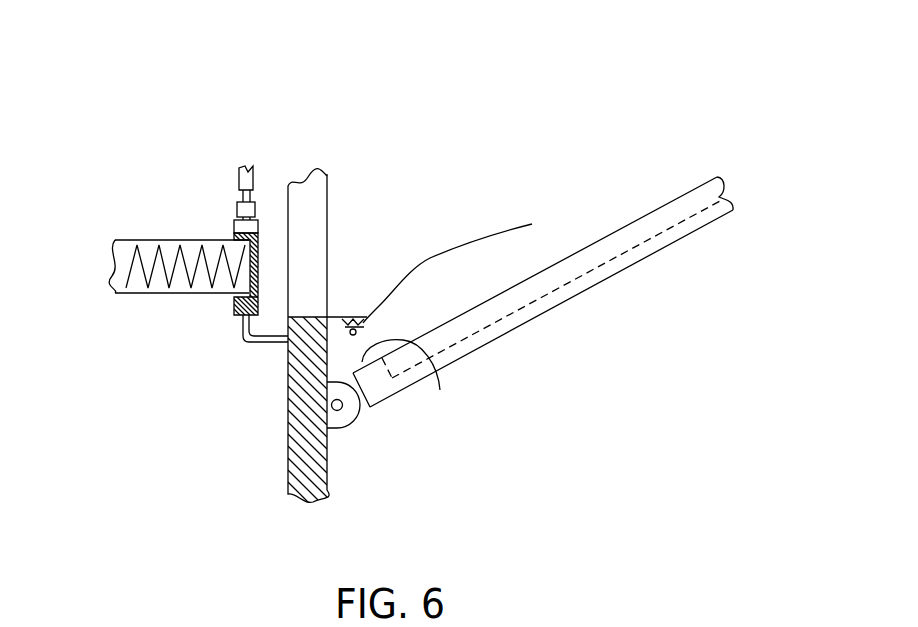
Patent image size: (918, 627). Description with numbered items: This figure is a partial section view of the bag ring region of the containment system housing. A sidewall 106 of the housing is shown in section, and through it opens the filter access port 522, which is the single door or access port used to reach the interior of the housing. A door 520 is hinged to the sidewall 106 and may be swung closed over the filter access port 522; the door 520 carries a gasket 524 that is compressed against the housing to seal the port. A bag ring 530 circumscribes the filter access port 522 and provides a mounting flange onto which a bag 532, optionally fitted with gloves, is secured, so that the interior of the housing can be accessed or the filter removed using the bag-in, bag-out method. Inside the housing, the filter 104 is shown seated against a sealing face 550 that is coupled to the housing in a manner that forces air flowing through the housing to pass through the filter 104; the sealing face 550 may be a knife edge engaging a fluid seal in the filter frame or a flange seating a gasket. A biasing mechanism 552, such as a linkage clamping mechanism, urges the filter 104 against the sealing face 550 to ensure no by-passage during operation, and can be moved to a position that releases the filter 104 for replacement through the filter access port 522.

The filter 104 is at (135, 239).
The sidewall 106 is at (327, 460).
The door 520 is at (665, 248).
The filter access port 522 is at (308, 210).
The gasket 524 is at (440, 390).
The bag ring 530 is at (348, 316).
The bag 532 is at (495, 232).
The sealing face 550 is at (243, 326).
The biasing mechanism 552 is at (240, 177).